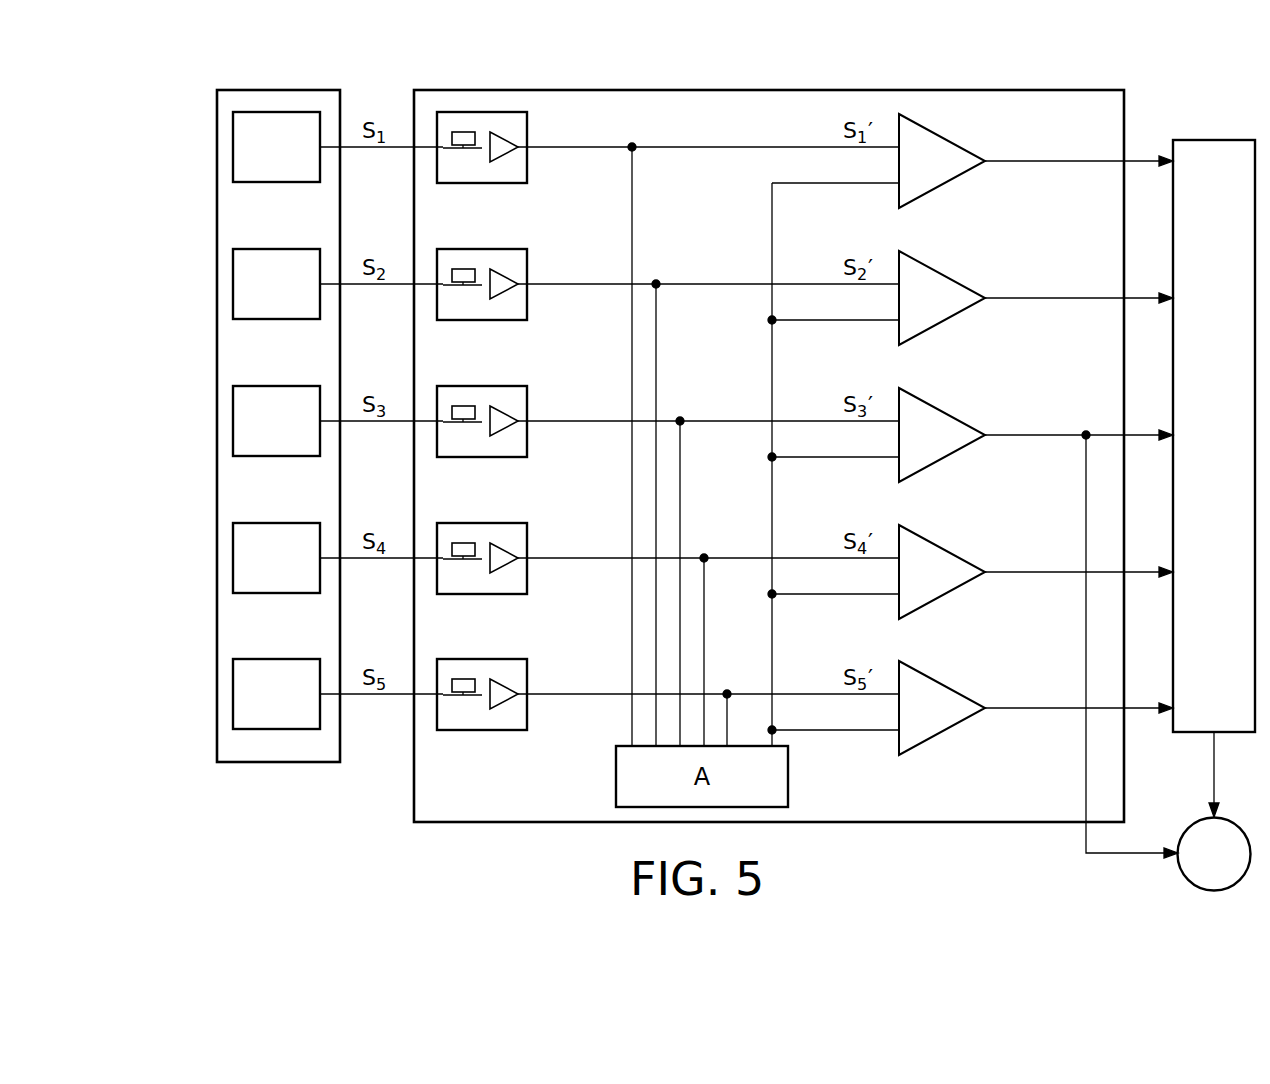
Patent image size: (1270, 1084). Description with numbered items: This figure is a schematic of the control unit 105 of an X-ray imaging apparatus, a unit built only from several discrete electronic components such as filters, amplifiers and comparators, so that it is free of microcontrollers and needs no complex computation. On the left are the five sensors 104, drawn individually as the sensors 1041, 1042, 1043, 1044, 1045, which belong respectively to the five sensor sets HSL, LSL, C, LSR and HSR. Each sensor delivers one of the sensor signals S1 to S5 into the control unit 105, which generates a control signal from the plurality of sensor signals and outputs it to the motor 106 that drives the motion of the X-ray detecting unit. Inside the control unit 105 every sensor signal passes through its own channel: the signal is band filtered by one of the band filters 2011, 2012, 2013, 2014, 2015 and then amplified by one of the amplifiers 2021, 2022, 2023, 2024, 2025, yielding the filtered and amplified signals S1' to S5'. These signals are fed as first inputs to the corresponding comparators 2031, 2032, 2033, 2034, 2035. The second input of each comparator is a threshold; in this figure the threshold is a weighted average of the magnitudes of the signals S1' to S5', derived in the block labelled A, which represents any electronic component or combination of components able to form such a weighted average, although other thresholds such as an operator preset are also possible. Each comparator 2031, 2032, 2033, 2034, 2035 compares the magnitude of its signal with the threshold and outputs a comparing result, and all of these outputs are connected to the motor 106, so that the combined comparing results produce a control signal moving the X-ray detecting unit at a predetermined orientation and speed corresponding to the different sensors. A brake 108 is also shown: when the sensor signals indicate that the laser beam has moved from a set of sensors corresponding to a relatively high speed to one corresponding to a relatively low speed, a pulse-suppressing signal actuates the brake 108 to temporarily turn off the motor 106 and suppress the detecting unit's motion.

The sensors 104 is at (272, 762).
The sensor 1041 is at (233, 142).
The sensor 1042 is at (233, 279).
The sensor 1043 is at (233, 416).
The sensor 1044 is at (233, 553).
The sensor 1045 is at (233, 689).
The control unit 105 is at (414, 786).
The band filter 2011 is at (460, 150).
The band filter 2012 is at (460, 287).
The band filter 2013 is at (460, 424).
The band filter 2014 is at (460, 561).
The band filter 2015 is at (460, 697).
The amplifier 2021 is at (506, 150).
The amplifier 2022 is at (506, 287).
The amplifier 2023 is at (506, 424).
The amplifier 2024 is at (506, 561).
The amplifier 2025 is at (506, 697).
The comparator 2031 is at (947, 138).
The comparator 2032 is at (947, 275).
The comparator 2033 is at (947, 412).
The comparator 2034 is at (947, 549).
The comparator 2035 is at (947, 685).
The motor 106 is at (1236, 449).
The brake 108 is at (1236, 866).